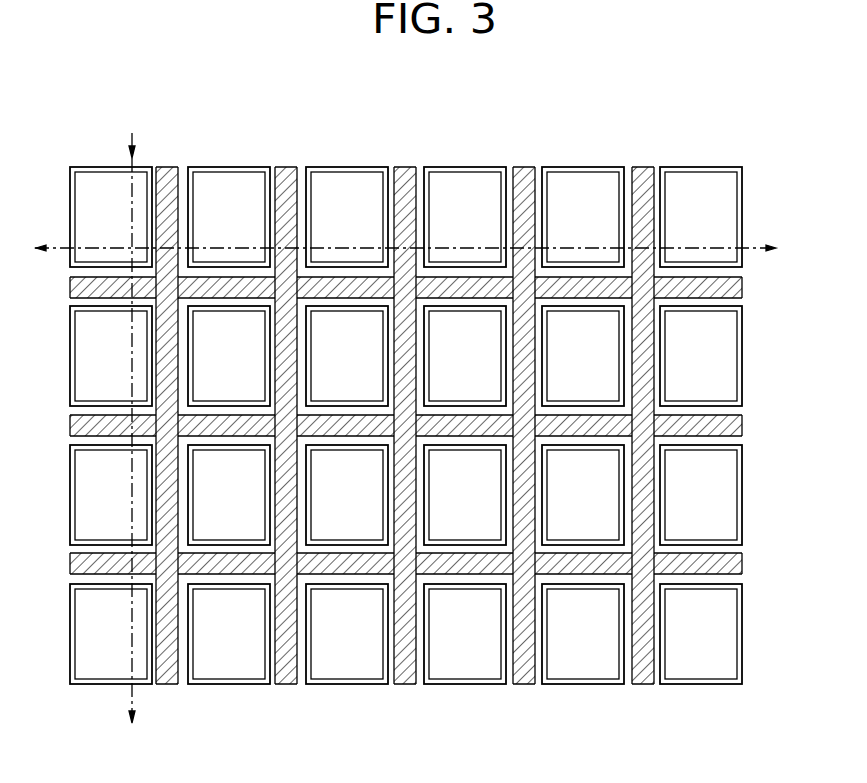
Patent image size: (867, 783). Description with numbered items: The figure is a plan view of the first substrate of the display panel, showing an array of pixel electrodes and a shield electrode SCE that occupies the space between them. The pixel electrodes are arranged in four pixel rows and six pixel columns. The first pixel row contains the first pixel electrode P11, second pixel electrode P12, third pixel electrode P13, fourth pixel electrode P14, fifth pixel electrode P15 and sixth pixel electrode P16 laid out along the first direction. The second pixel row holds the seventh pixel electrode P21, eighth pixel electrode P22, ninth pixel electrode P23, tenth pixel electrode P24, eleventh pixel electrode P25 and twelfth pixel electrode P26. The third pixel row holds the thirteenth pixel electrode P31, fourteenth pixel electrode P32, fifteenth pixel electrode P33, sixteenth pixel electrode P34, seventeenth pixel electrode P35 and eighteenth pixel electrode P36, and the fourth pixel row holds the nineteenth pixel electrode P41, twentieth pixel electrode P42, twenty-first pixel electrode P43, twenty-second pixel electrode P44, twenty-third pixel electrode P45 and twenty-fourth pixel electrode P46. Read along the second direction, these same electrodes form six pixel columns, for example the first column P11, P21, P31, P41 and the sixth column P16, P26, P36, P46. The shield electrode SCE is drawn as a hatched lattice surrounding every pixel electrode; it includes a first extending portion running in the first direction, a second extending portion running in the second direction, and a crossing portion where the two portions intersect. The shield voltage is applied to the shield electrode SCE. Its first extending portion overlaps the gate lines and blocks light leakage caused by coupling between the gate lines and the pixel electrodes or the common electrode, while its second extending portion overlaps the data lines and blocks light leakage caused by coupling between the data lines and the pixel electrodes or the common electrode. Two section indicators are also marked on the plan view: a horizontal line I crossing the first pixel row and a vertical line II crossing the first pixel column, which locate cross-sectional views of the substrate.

The shield electrode SCE is at (167, 175).
The first pixel electrode P11 is at (111, 217).
The second pixel electrode P12 is at (229, 217).
The third pixel electrode P13 is at (347, 217).
The fourth pixel electrode P14 is at (465, 217).
The fifth pixel electrode P15 is at (583, 217).
The sixth pixel electrode P16 is at (701, 217).
The seventh pixel electrode P21 is at (111, 356).
The eighth pixel electrode P22 is at (229, 356).
The ninth pixel electrode P23 is at (347, 356).
The tenth pixel electrode P24 is at (465, 356).
The eleventh pixel electrode P25 is at (583, 356).
The twelfth pixel electrode P26 is at (701, 356).
The thirteenth pixel electrode P31 is at (111, 495).
The fourteenth pixel electrode P32 is at (229, 495).
The fifteenth pixel electrode P33 is at (347, 495).
The sixteenth pixel electrode P34 is at (465, 495).
The seventeenth pixel electrode P35 is at (583, 495).
The eighteenth pixel electrode P36 is at (701, 495).
The nineteenth pixel electrode P41 is at (111, 634).
The twentieth pixel electrode P42 is at (229, 634).
The twenty-first pixel electrode P43 is at (347, 634).
The twenty-second pixel electrode P44 is at (465, 634).
The twenty-third pixel electrode P45 is at (583, 634).
The twenty-fourth pixel electrode P46 is at (701, 634).
The section line I-I' I is at (408, 247).
The section line II-II' II is at (133, 431).